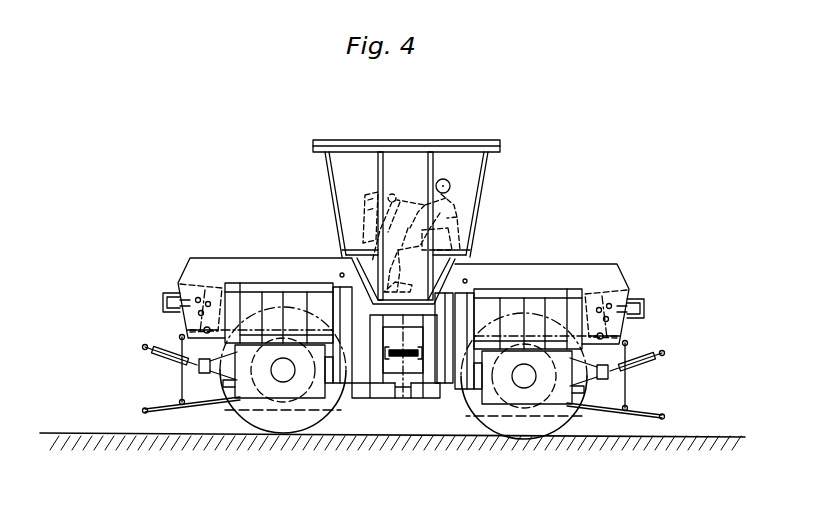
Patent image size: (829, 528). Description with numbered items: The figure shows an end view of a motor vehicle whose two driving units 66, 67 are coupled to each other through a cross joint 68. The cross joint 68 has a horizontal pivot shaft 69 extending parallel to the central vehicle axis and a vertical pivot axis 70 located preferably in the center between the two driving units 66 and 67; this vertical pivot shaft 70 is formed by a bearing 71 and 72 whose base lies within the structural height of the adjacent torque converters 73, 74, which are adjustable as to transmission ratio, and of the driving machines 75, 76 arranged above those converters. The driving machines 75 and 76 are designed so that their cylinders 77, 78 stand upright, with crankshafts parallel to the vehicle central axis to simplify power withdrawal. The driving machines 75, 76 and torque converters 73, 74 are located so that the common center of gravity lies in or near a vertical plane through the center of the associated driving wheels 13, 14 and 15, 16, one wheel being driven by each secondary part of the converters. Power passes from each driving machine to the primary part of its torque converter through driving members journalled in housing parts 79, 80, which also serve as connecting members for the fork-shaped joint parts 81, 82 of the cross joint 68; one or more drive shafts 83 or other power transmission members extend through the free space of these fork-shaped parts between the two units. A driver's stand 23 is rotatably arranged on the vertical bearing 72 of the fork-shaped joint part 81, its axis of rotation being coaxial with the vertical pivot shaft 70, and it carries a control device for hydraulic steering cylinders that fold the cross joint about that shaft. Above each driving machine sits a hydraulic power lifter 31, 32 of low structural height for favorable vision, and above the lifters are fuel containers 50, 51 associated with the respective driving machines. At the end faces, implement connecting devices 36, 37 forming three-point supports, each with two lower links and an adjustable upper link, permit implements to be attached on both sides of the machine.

The driver's stand 23 is at (397, 148).
The vertical bearing 72 is at (400, 317).
The fuel container 50 is at (198, 265).
The fuel container 51 is at (578, 277).
The driving machine 75 is at (240, 303).
The driving machine 76 is at (542, 292).
The driving unit 66 is at (250, 300).
The driving unit 67 is at (537, 302).
The cylinder 77 is at (265, 300).
The cylinder 78 is at (520, 302).
The torque converter 73 is at (267, 383).
The torque converter 74 is at (511, 390).
The housing part 79 is at (331, 392).
The driving wheel 13 is at (262, 393).
The driving wheel 14 is at (247, 413).
The driving wheel 15 is at (544, 396).
The driving wheel 16 is at (557, 422).
The hydraulic power lifter 31 is at (187, 288).
The hydraulic power lifter 32 is at (623, 295).
The implement connecting device 36 is at (148, 392).
The implement connecting device 37 is at (652, 398).
The horizontal pivot shaft 69 is at (378, 357).
The bearing 71 is at (402, 375).
The fork-shaped joint part 82 is at (425, 377).
The drive shaft 83 is at (403, 340).
The vertical pivot axis 70 is at (385, 381).
The cross joint 68 is at (405, 387).
The fork-shaped joint part 81 is at (420, 390).
The housing part 80 is at (455, 383).